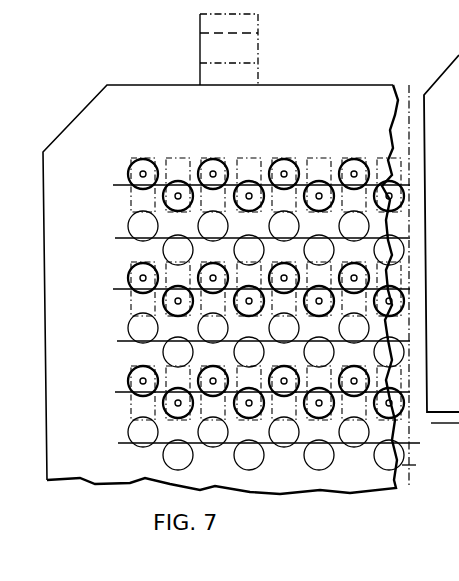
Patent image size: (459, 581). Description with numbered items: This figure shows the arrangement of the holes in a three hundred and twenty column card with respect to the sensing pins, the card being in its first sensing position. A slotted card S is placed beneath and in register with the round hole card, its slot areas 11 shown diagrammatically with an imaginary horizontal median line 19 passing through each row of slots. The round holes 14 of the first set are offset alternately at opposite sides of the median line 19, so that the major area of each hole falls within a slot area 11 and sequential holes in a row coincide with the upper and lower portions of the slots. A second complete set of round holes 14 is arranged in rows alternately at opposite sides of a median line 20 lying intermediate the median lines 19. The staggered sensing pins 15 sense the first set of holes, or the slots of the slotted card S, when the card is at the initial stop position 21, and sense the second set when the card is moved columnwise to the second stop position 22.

The slot area 11 is at (311, 157).
The round hole 14 is at (265, 253).
The sensing pin 15 is at (213, 171).
The median line 19 is at (113, 185).
The median line 20 is at (113, 238).
The initial stop position 21 is at (240, 85).
The second stop position 22 is at (237, 32).
The slotted card S is at (413, 285).